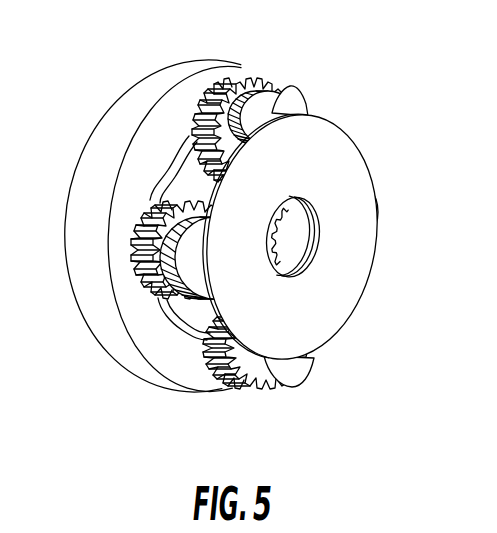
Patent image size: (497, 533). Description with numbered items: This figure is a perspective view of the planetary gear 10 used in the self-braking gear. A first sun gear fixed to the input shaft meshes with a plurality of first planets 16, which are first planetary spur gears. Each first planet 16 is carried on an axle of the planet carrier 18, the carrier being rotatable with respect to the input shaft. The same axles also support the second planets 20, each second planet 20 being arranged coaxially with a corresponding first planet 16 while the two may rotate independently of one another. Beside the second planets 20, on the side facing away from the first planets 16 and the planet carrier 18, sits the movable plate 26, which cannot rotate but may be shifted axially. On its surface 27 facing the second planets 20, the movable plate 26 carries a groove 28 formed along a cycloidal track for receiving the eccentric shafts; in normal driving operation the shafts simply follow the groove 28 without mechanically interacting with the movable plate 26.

The planetary gear 10 is at (243, 227).
The first planets 16 is at (287, 105).
The planet carrier 18 is at (339, 304).
The second planets 20 is at (245, 80).
The movable plate 26 is at (115, 353).
The surface 27 is at (143, 157).
The groove 28 is at (179, 134).